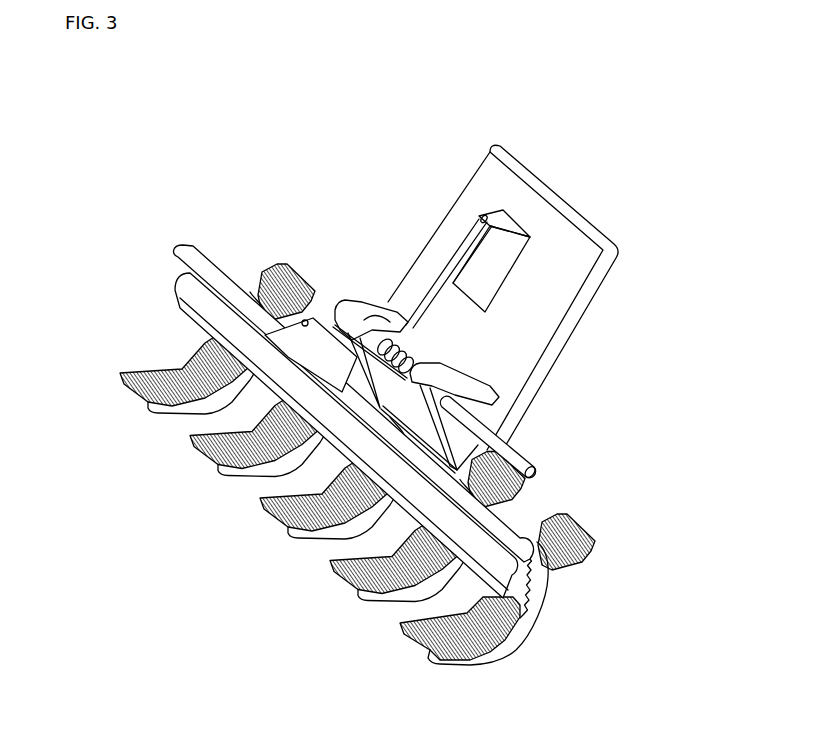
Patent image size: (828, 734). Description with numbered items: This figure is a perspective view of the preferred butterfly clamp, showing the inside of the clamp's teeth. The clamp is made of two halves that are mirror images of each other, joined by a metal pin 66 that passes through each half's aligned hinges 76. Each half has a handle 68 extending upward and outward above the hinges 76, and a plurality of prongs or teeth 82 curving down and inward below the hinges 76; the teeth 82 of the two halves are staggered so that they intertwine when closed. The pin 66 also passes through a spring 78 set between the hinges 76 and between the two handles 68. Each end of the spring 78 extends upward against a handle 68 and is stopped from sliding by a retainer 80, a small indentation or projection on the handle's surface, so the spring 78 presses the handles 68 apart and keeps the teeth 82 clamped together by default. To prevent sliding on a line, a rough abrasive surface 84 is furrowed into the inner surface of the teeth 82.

The metal pin 66 is at (510, 457).
The handle 68 is at (498, 183).
The hinges 76 is at (365, 318).
The spring 78 is at (422, 354).
The retainer 80 is at (286, 336).
The teeth 82 is at (260, 523).
The abrasive surface 84 is at (502, 653).